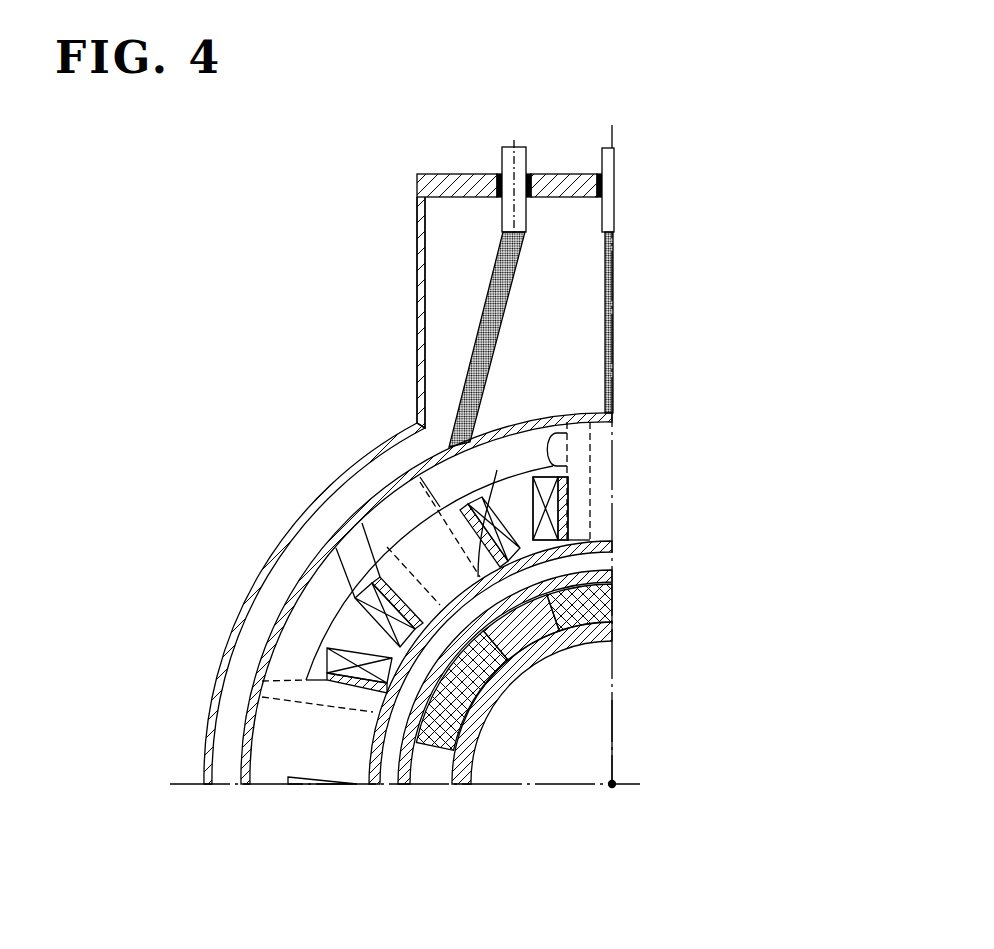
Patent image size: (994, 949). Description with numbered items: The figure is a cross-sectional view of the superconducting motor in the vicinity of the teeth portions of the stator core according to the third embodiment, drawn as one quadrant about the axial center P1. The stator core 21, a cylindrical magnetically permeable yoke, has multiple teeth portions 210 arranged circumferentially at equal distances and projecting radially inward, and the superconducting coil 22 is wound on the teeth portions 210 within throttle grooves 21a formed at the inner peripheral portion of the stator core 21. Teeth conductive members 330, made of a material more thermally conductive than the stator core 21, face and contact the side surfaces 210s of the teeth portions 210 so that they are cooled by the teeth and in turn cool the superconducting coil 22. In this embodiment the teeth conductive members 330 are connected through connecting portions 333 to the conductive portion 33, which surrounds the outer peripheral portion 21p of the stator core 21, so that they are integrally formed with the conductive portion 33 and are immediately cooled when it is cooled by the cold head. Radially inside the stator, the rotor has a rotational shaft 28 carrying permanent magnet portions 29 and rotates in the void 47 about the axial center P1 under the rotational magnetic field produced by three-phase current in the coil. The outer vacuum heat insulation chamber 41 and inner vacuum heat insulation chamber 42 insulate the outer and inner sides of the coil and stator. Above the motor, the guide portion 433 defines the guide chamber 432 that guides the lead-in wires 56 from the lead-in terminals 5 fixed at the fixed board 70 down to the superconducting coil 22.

The lead-in terminal 5 is at (508, 162).
The stator core 21 is at (297, 631).
The throttle groove 21a is at (337, 623).
The outer peripheral portion 21p is at (263, 643).
The superconducting coil 22 is at (570, 484).
The rotational shaft 28 is at (607, 625).
The permanent magnet portion 29 is at (613, 600).
The conductive portion 33 is at (372, 578).
The outer vacuum heat insulation chamber 41 is at (278, 578).
The inner vacuum heat insulation chamber 42 is at (605, 557).
The void 47 is at (600, 720).
The lead-in wire 56 is at (508, 283).
The fixed board 70 is at (557, 182).
The teeth portion 210 is at (397, 527).
The side surface 210s is at (497, 470).
The teeth conductive member 330 is at (580, 516).
The connecting portion 333 is at (420, 482).
The guide chamber 432 is at (445, 228).
The guide portion 433 is at (418, 262).
The axial center P1 is at (615, 784).